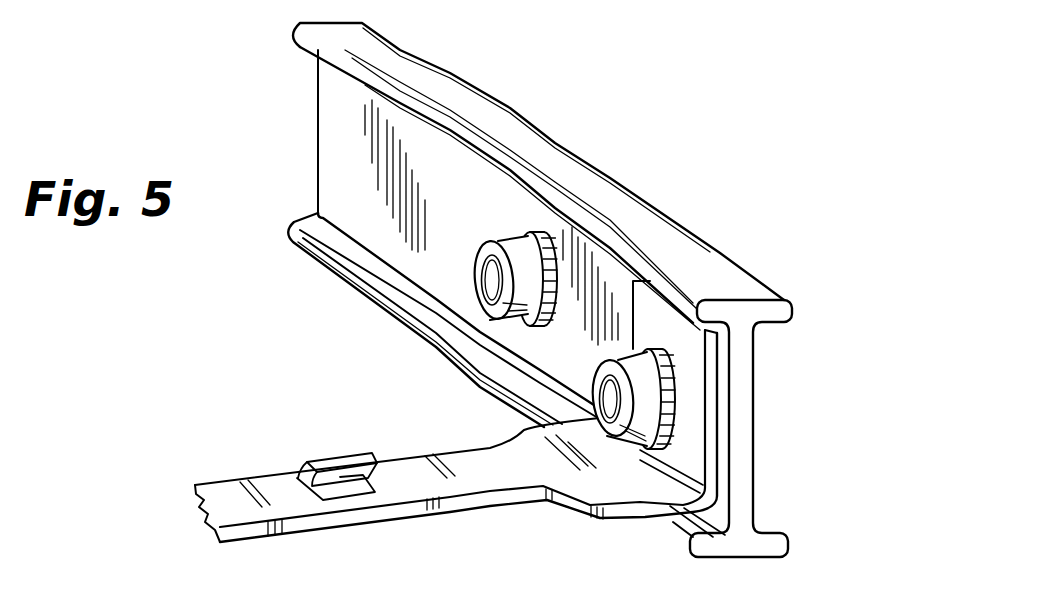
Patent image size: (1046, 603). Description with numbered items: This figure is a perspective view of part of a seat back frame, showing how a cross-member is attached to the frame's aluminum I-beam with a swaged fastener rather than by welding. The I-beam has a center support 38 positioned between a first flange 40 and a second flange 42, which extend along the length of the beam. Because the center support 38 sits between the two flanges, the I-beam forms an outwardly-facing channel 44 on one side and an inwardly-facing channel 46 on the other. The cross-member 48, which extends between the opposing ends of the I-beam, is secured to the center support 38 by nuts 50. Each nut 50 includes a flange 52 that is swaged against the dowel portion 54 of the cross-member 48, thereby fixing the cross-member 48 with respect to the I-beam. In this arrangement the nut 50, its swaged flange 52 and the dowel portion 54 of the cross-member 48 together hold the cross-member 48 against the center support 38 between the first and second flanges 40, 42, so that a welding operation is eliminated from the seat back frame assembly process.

The center support 38 is at (757, 439).
The first flange 40 is at (772, 326).
The second flange 42 is at (760, 524).
The outwardly-facing channel 44 is at (756, 495).
The inwardly-facing channel 46 is at (430, 248).
The cross-member 48 is at (471, 504).
The nut 50 is at (602, 403).
The flange 52 is at (645, 352).
The dowel portion 54 is at (705, 405).